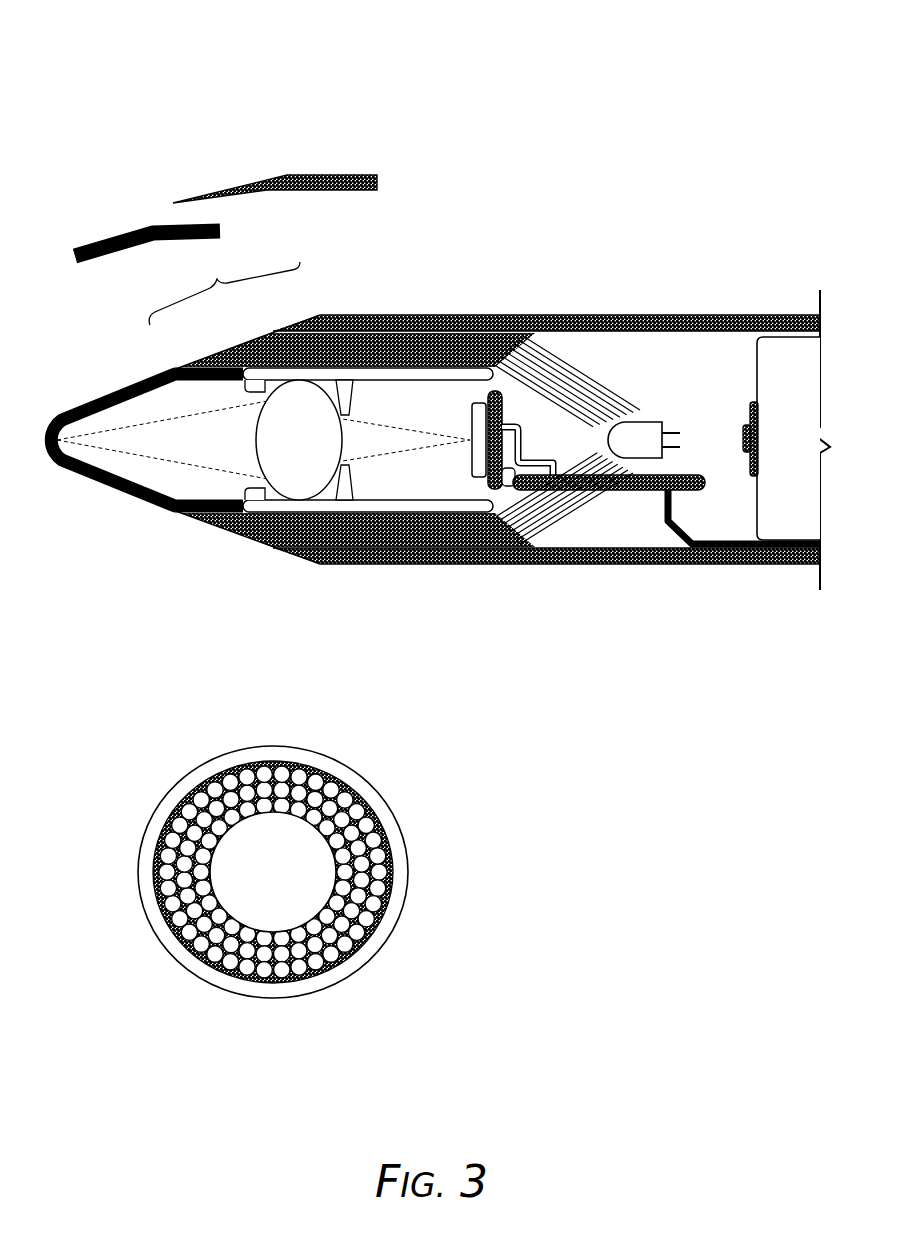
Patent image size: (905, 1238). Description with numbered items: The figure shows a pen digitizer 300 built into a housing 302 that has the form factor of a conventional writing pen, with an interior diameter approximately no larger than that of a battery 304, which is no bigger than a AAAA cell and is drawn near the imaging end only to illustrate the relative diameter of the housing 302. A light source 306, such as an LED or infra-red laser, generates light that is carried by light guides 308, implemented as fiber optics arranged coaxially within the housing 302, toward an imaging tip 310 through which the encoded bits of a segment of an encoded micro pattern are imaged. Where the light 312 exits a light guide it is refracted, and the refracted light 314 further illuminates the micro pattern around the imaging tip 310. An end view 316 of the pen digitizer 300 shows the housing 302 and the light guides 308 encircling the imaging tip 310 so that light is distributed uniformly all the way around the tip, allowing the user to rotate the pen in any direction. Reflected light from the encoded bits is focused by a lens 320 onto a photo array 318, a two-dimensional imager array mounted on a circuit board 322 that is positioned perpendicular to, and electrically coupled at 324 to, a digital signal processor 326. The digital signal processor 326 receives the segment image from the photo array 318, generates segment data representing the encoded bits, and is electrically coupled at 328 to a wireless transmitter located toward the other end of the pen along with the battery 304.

The pen digitizer 300 is at (722, 78).
The housing 302 is at (547, 317).
The battery 304 is at (787, 530).
The light source 306 is at (647, 420).
The light guides 308 is at (407, 337).
The imaging tip 310 is at (123, 383).
The light 312 is at (240, 208).
The refracted light 314 is at (173, 203).
The end view 316 is at (249, 696).
The photo array 318 is at (470, 418).
The lens 320 is at (306, 449).
The circuit board 322 is at (503, 414).
The electrical coupling 324 is at (537, 460).
The digital signal processor 326 is at (623, 493).
The electrical coupling 328 is at (678, 538).